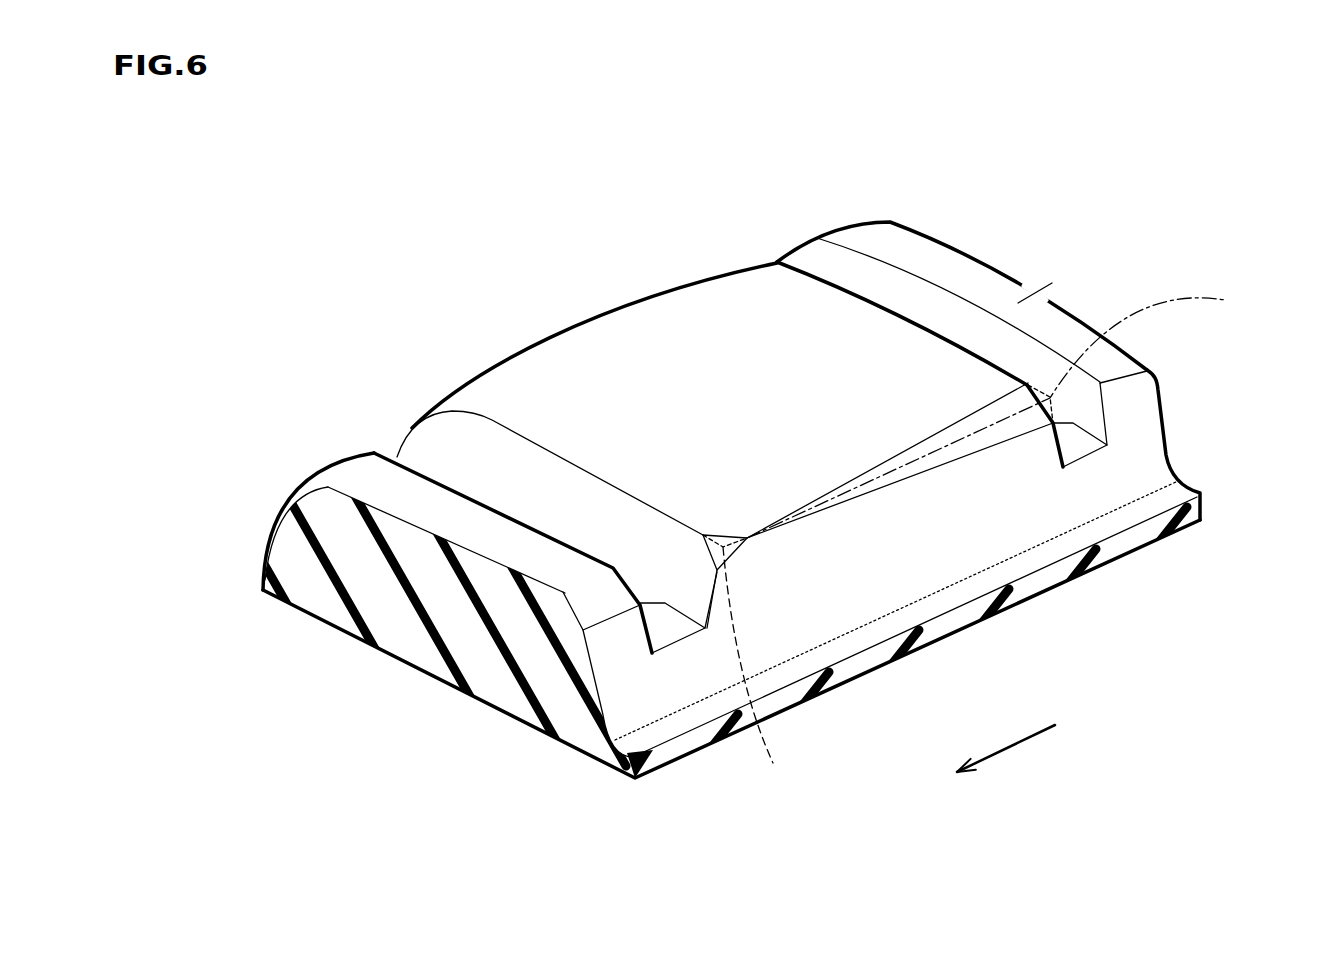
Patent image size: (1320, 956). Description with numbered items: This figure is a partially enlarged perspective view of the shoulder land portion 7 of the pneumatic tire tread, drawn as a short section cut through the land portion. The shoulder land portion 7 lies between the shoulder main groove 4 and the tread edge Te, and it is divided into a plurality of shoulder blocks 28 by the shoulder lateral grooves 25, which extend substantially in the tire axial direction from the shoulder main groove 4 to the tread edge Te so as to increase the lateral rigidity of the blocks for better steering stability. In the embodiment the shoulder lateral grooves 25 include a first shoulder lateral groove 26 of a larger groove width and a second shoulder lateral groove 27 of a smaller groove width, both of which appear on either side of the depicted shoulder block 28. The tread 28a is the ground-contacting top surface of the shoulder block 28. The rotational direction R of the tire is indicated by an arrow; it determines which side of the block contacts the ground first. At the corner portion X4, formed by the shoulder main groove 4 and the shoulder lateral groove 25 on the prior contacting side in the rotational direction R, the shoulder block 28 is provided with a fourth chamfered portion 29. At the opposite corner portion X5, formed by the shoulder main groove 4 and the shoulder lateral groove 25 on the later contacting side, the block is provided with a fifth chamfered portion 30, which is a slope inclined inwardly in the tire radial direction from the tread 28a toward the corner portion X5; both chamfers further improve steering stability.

The shoulder land portion 7 is at (720, 243).
The shoulder main groove 4 is at (1062, 548).
The shoulder lateral groove 25 is at (756, 401).
The first shoulder lateral groove 26 is at (487, 484).
The second shoulder lateral groove 27 is at (885, 290).
The shoulder block 28 is at (372, 488).
The tread of the shoulder block 28a is at (547, 362).
The tread edge Te is at (590, 314).
The fourth chamfered portion 29 is at (747, 538).
The fifth chamfered portion 30 is at (608, 605).
The corner portion X4 is at (762, 669).
The corner portion X5 is at (1002, 412).
The rotational direction R is at (1007, 748).